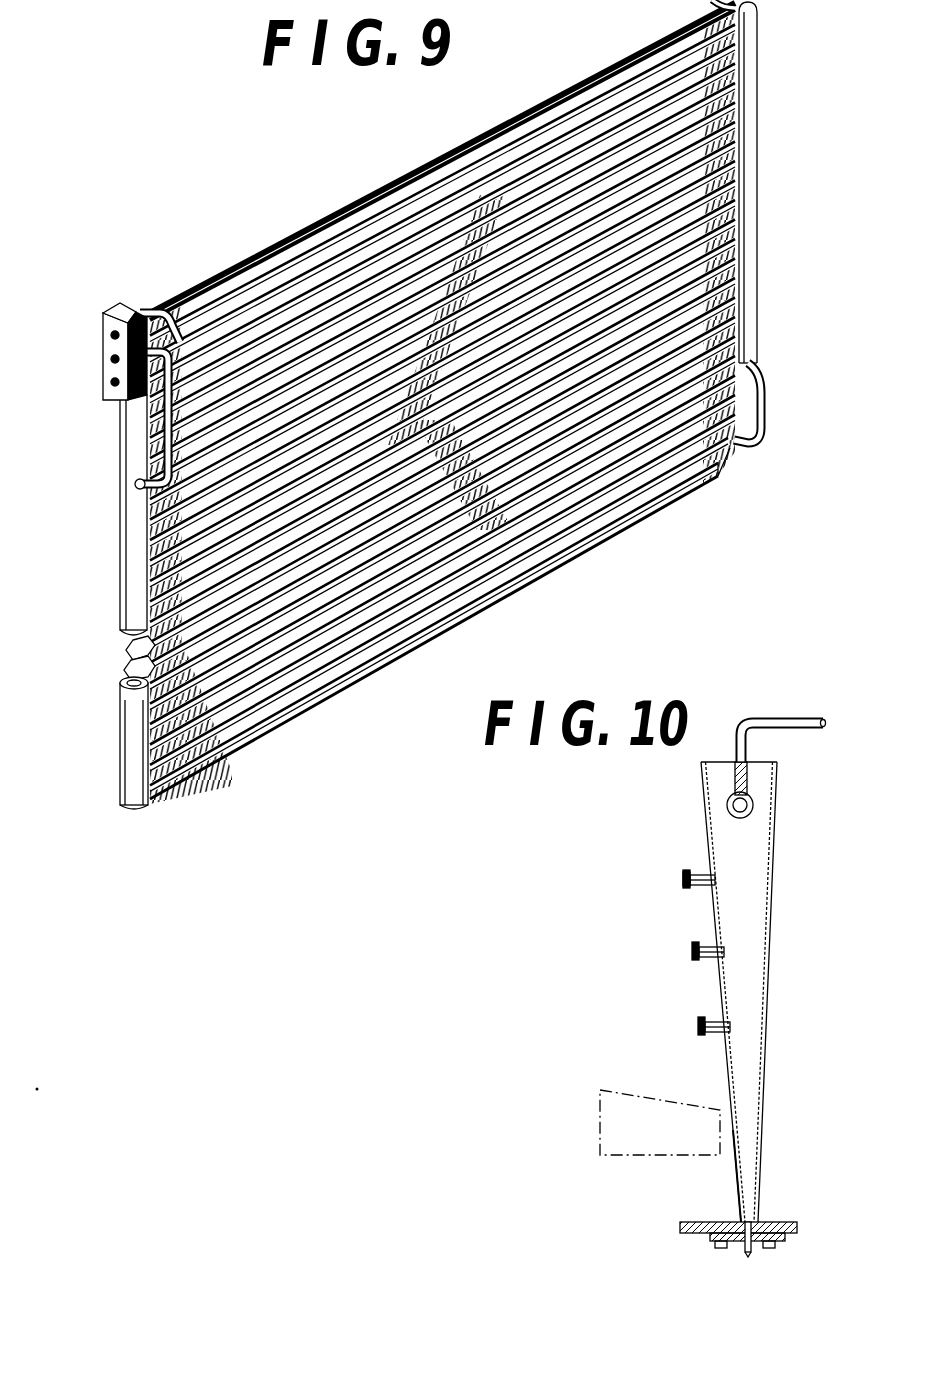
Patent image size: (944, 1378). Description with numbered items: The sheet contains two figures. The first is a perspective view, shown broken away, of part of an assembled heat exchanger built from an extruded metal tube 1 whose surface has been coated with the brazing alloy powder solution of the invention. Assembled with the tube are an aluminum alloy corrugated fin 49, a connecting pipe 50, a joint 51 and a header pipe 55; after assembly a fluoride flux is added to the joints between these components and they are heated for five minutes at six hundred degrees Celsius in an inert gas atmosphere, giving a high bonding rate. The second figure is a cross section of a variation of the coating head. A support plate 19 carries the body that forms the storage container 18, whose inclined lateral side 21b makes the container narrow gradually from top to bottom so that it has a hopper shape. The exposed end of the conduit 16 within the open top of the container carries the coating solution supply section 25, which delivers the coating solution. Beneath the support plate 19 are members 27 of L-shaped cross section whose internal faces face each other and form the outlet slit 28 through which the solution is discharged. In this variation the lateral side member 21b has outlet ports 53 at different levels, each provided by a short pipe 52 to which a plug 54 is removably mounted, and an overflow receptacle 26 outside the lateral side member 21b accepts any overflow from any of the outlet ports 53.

In FIG. 9, the extruded metal tube 1 is at (133, 652).
In FIG. 9, the corrugated fin 49 is at (237, 752).
In FIG. 9, the connecting pipe 50 is at (757, 228).
In FIG. 9, the joint 51 is at (120, 305).
In FIG. 9, the header pipe 55 is at (120, 432).
In FIG. 10, the conduit 16 is at (789, 719).
In FIG. 10, the storage container 18 is at (773, 934).
In FIG. 10, the support plate 19 is at (783, 1220).
In FIG. 10, the lateral side 21b is at (733, 1173).
In FIG. 10, the coating solution supply section 25 is at (757, 785).
In FIG. 10, the overflow receptacle 26 is at (600, 1103).
In FIG. 10, the L-shaped members 27 is at (757, 1250).
In FIG. 10, the outlet slit 28 is at (749, 1258).
In FIG. 10, the short pipe 52 is at (700, 873).
In FIG. 10, the outlet ports 53 is at (698, 892).
In FIG. 10, the plug 54 is at (686, 878).